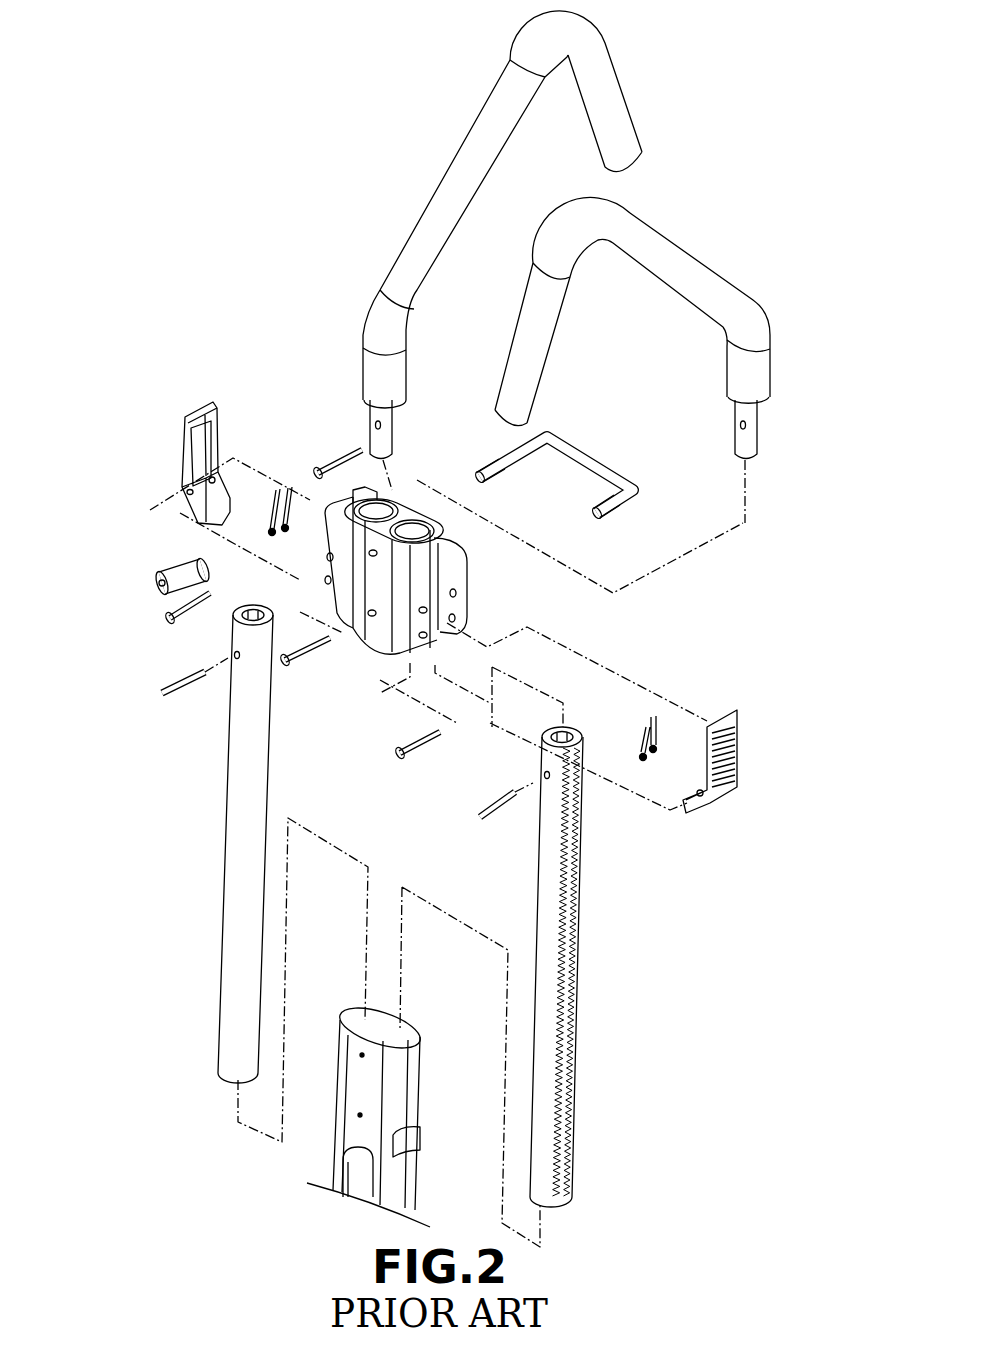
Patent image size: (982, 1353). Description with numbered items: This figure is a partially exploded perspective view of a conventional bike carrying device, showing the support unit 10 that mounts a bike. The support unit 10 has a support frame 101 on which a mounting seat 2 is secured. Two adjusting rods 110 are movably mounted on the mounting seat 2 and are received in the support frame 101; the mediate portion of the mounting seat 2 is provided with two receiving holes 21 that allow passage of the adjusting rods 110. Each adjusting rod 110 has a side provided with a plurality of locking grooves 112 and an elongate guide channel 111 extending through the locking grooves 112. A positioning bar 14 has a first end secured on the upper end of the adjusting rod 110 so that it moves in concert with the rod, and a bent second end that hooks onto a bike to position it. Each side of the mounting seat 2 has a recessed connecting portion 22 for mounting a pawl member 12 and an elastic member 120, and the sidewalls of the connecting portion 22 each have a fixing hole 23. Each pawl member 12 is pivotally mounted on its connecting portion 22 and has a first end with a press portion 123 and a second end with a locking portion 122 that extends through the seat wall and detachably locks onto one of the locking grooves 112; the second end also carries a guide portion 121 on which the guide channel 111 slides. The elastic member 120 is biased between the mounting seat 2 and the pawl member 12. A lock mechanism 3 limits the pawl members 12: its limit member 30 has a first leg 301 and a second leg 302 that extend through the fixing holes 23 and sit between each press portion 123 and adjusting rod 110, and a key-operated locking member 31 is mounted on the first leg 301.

The positioning bar 14 is at (712, 285).
The limit member 30 is at (580, 481).
The first leg 301 is at (510, 460).
The second leg 302 is at (620, 507).
The mounting seat 2 is at (431, 613).
The receiving hole 21 is at (423, 533).
The connecting portion 22 is at (447, 570).
The fixing hole 23 is at (433, 607).
The pawl member 12 is at (213, 447).
The guide portion 121 is at (223, 482).
The elastic member 120 is at (285, 523).
The locking portion 122 is at (729, 741).
The press portion 123 is at (737, 750).
The lock mechanism 3 is at (145, 572).
The locking member 31 is at (180, 577).
The support unit 10 is at (240, 1163).
The support frame 101 is at (360, 1135).
The adjusting rod 110 is at (598, 967).
The guide channel 111 is at (577, 867).
The locking groove 112 is at (577, 903).